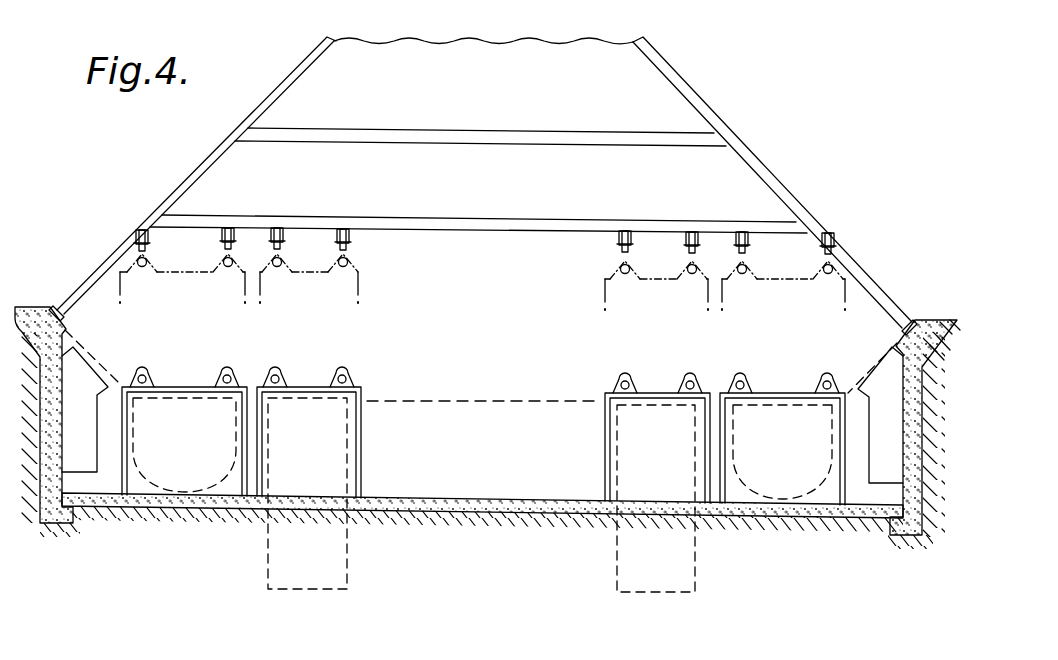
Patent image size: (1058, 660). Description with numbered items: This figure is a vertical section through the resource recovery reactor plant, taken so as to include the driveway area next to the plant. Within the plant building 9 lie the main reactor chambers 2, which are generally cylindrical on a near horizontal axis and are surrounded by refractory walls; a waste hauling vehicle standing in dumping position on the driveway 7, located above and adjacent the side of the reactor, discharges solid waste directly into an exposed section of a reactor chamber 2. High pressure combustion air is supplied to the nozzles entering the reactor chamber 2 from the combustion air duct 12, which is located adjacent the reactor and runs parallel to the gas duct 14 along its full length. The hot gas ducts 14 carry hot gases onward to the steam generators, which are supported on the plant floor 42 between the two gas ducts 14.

The main reactor chamber 2 is at (157, 495).
The driveway 7 is at (31, 307).
The plant building 9 is at (738, 134).
The combustion air duct 12 is at (92, 422).
The gas duct 14 is at (362, 432).
The plant floor 42 is at (518, 401).